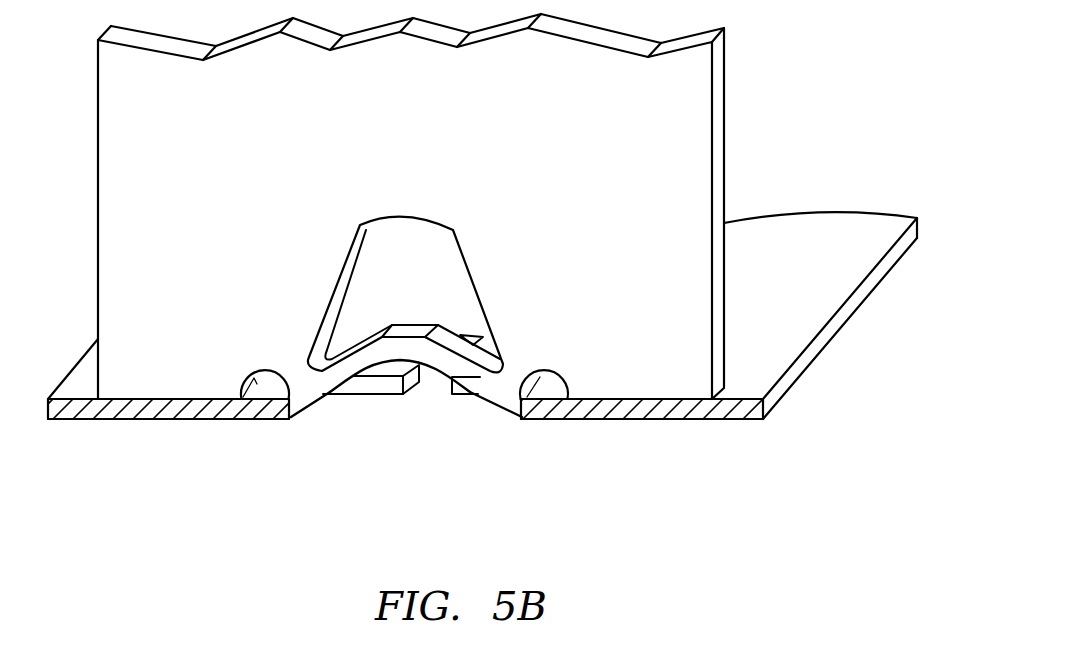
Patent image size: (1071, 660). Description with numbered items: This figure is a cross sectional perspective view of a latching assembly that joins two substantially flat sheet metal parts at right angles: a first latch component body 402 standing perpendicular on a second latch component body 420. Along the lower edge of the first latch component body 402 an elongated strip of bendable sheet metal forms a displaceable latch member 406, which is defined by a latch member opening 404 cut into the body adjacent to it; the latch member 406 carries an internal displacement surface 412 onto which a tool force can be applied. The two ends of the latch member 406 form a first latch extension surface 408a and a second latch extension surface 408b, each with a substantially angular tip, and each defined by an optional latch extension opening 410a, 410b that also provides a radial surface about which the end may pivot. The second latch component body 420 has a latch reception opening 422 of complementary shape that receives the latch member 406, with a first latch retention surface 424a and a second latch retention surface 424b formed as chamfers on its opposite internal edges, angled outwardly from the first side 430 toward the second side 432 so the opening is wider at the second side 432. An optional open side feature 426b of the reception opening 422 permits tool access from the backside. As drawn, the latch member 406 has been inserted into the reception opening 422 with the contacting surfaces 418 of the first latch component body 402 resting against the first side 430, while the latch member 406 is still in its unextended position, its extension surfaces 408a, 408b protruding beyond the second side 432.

The first latch component body 402 is at (712, 107).
The latch member opening 404 is at (447, 248).
The displaceable latch member 406 is at (360, 358).
The first latch extension surface 408a is at (292, 418).
The second latch extension surface 408b is at (520, 423).
The first latch extension opening 410a is at (263, 380).
The second latch extension opening 410b is at (553, 385).
The internal displacement surface 412 is at (413, 329).
The contacting surfaces 418 is at (127, 399).
The second latch component body 420 is at (848, 308).
The latch reception opening 422 is at (433, 393).
The first latch retention surface 424a is at (285, 420).
The second latch retention surface 424b is at (527, 421).
The open side feature 426b is at (425, 380).
The first side 430 is at (787, 243).
The second side 432 is at (808, 362).